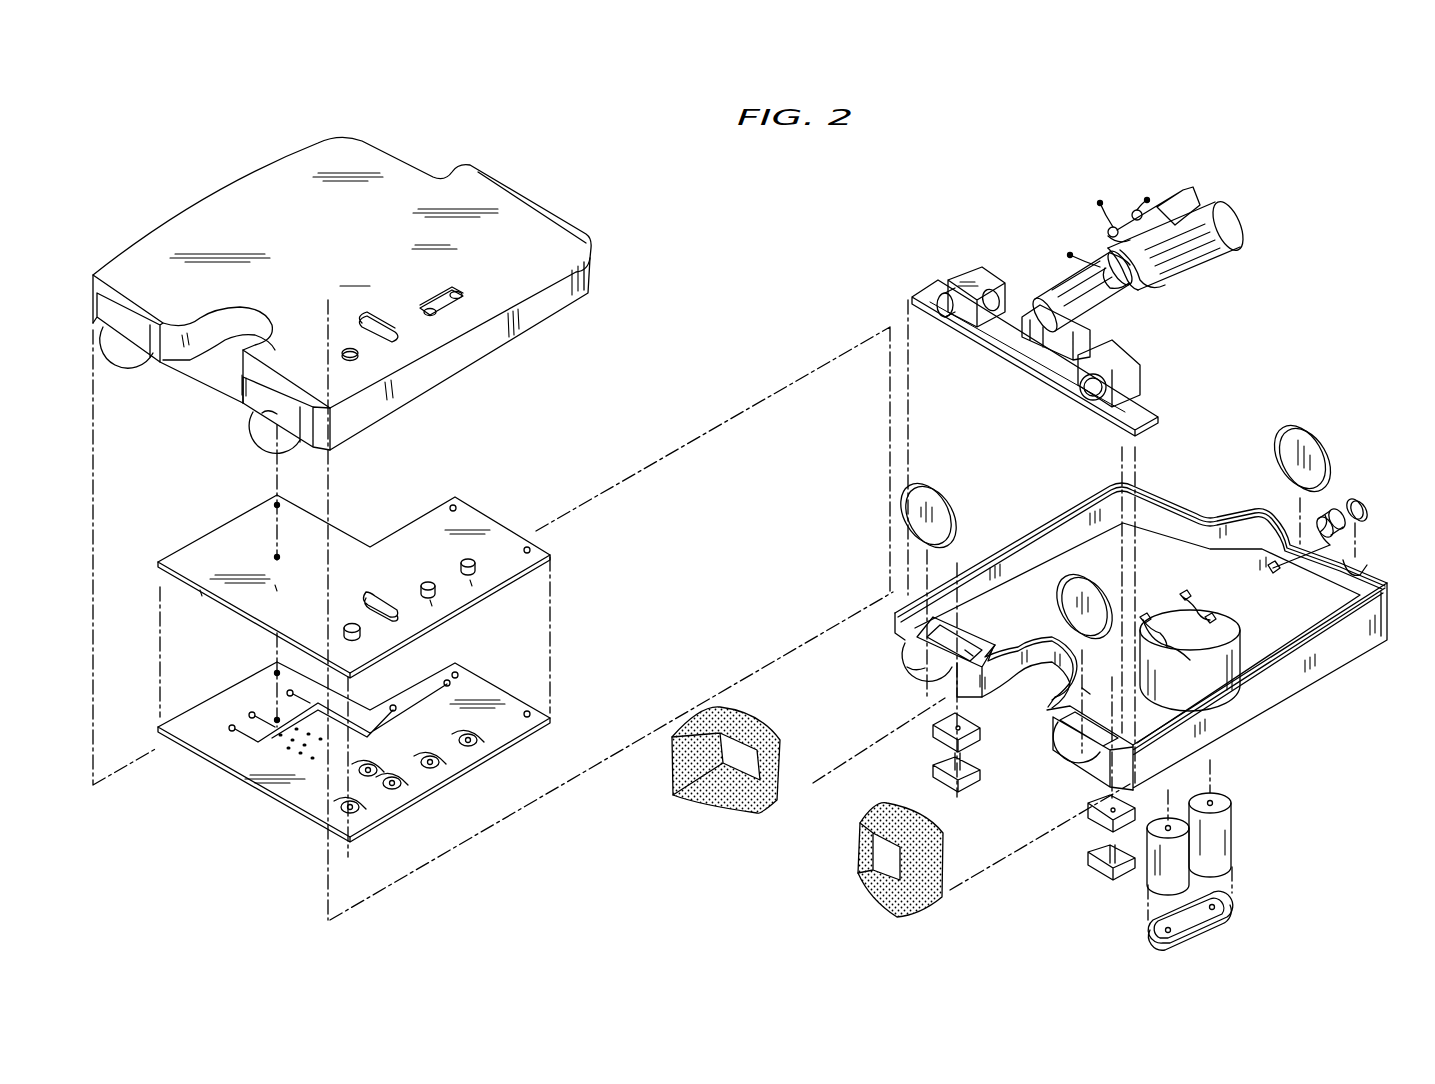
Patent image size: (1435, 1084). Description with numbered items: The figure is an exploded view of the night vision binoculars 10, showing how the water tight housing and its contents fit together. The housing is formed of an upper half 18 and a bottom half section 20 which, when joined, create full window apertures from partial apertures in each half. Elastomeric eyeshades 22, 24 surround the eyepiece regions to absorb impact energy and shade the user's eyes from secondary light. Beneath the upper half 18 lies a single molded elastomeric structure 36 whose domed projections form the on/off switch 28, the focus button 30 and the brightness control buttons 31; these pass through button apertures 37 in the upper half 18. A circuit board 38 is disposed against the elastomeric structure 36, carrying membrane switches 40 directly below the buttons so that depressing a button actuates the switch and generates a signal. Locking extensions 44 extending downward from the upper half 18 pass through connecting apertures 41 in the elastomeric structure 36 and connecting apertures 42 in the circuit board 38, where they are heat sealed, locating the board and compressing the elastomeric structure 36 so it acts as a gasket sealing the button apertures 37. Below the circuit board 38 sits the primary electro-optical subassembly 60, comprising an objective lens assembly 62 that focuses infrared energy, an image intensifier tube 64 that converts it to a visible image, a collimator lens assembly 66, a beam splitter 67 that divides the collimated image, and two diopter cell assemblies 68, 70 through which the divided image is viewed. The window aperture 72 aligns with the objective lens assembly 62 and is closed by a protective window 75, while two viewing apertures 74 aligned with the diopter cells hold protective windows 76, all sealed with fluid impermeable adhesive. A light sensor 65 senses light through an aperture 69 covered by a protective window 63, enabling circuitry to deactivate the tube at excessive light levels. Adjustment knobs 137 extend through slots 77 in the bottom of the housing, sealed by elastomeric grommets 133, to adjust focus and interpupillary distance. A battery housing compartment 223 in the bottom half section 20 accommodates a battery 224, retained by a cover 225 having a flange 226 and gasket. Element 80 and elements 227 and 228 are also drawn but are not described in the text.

The night vision binoculars 10 is at (817, 226).
The upper half of the housing 18 is at (517, 223).
The bottom half section of the housing 20 is at (1323, 658).
The eyeshade 22 is at (707, 720).
The eyeshade 24 is at (860, 843).
The on/off switch 28 is at (345, 625).
The focus button 30 is at (383, 594).
The brightness control buttons 31 is at (450, 546).
The elastomeric structure 36 is at (514, 528).
The button apertures 37 is at (347, 353).
The circuit board 38 is at (516, 695).
The membrane switches 40 is at (428, 757).
The connecting apertures 41 is at (276, 557).
The connecting apertures 42 is at (276, 720).
The locking extensions 44 is at (262, 413).
The primary electro-optical subassembly 60 is at (1248, 200).
The objective lens assembly 62 is at (1210, 270).
The protective window 63 is at (1362, 508).
The image intensifier tube 64 is at (1137, 288).
The light sensor 65 is at (1330, 513).
The collimator lens assembly 66 is at (1075, 283).
The beam splitter 67 is at (1030, 343).
The diopter cell assembly 68 is at (980, 270).
The aperture 69 is at (1362, 566).
The diopter cell assembly 70 is at (1107, 350).
The window aperture 72 is at (1272, 549).
The viewing apertures 74 is at (907, 667).
The protective window 75 is at (1327, 453).
The protective windows 76 is at (905, 516).
The slots 77 is at (972, 652).
The base plate 80 is at (1063, 367).
The elastomeric grommets 133 is at (940, 733).
The adjustment knobs 137 is at (1103, 873).
The battery housing compartment 223 is at (1232, 645).
The battery 224 is at (1230, 840).
The cover 225 is at (1208, 916).
The flange 226 is at (1237, 903).
The battery contact 227 is at (1183, 640).
The battery wire 228 is at (1213, 607).